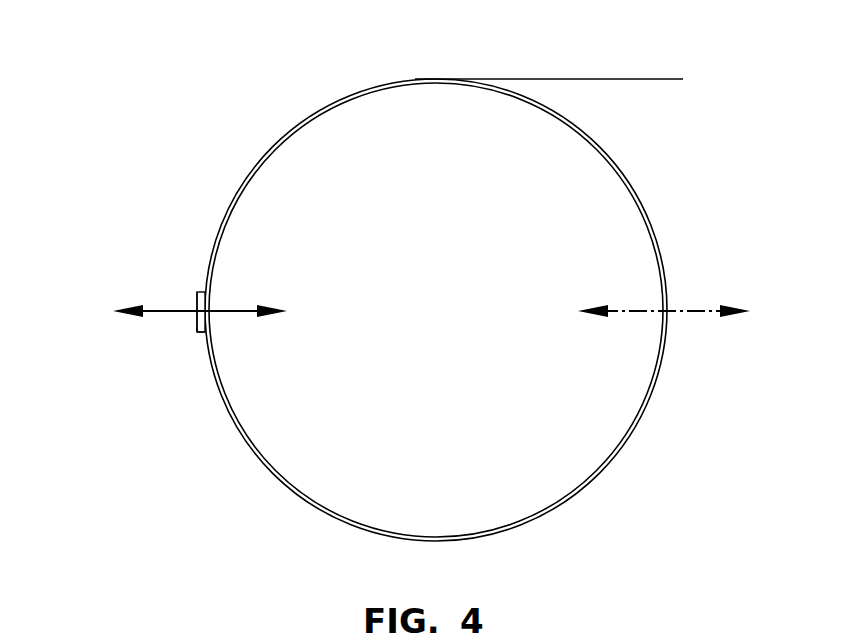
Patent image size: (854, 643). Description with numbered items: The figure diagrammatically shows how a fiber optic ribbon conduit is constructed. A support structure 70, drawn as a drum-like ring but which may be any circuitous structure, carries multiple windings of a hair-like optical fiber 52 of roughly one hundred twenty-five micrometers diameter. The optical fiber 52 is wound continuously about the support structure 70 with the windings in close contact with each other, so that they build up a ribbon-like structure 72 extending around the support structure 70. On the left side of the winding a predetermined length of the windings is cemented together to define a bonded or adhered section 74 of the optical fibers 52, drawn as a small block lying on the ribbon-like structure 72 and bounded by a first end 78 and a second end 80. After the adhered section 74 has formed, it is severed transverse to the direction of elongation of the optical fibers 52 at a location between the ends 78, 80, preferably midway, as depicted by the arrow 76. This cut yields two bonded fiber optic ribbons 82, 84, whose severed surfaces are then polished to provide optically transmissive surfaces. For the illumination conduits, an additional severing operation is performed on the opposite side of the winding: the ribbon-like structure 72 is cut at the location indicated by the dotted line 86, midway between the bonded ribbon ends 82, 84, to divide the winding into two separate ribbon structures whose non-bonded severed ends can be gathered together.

The optical fiber 52 is at (611, 79).
The support structure 70 is at (433, 310).
The ribbon-like structure 72 is at (265, 148).
The adhered section 74 is at (193, 322).
The arrow 76 is at (153, 310).
The end of the adhered section 78 is at (197, 290).
The end of the adhered section 80 is at (194, 327).
The bonded fiber optic ribbon 82 is at (195, 296).
The bonded fiber optic ribbon 84 is at (193, 318).
The dotted line 86 is at (687, 312).